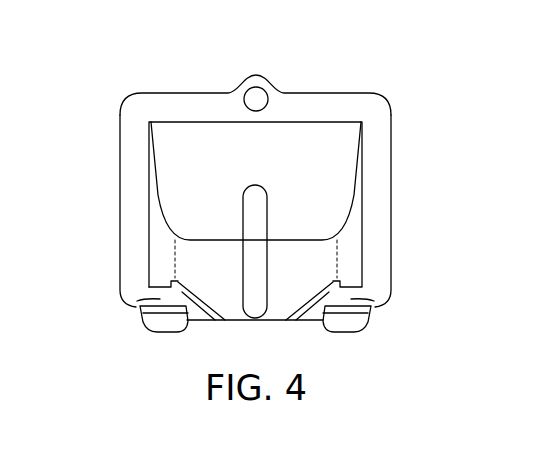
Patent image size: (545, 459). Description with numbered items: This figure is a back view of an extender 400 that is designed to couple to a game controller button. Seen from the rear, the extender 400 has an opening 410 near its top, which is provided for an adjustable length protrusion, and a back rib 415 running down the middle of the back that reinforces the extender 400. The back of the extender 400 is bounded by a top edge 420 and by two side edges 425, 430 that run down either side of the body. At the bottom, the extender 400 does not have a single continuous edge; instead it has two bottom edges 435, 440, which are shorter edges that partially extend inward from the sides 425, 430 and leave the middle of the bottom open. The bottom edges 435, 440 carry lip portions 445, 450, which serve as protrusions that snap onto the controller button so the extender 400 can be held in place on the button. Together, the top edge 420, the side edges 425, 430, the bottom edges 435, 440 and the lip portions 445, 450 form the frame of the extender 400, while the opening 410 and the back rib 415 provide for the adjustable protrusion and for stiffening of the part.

The extender 400 is at (409, 86).
The opening 410 is at (255, 96).
The back rib 415 is at (268, 207).
The top edge 420 is at (200, 103).
The side edge 425 is at (383, 197).
The side edge 430 is at (128, 197).
The bottom edge 435 is at (138, 312).
The bottom edge 440 is at (372, 312).
The lip portion 445 is at (176, 283).
The lip portion 450 is at (332, 283).